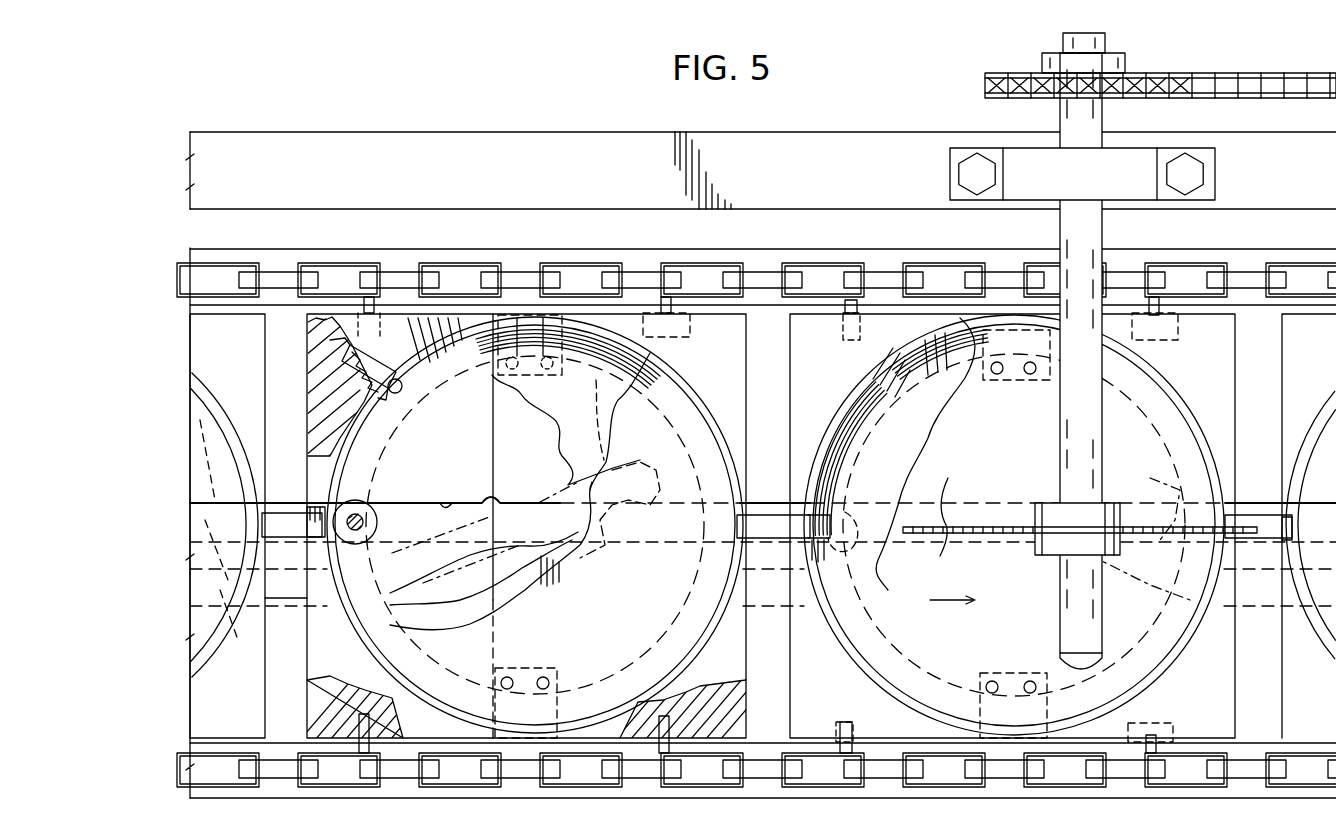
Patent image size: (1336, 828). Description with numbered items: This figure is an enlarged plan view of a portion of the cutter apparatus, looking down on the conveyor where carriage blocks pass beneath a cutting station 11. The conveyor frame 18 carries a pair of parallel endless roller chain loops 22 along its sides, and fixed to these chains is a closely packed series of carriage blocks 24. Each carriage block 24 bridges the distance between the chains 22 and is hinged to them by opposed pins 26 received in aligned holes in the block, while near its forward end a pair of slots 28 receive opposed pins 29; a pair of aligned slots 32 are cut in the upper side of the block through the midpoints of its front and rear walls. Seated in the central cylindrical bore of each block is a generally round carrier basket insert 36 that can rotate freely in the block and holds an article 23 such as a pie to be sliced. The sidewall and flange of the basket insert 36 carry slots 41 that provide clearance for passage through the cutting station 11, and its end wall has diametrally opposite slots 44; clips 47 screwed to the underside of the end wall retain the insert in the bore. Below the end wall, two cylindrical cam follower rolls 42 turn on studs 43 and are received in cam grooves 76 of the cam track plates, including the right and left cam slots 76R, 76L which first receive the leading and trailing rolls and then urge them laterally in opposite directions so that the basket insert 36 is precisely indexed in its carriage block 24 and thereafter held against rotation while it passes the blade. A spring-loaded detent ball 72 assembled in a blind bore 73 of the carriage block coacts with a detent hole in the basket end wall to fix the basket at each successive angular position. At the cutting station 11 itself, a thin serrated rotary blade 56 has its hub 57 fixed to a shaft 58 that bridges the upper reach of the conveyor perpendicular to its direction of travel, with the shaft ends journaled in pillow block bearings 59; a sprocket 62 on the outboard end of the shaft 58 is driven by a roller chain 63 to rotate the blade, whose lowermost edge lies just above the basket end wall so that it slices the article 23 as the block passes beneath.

The cutting station 11 is at (903, 142).
The frame 18 is at (546, 138).
The roller chain loops 22 is at (834, 266).
The articles 23 is at (642, 594).
The carriage block 24 is at (449, 311).
The pins 26 is at (378, 297).
The slots 28 is at (724, 292).
The pins 29 is at (672, 294).
The aligned slots 32 is at (312, 520).
The carrier basket insert 36 is at (823, 429).
The slots 41 is at (830, 517).
The cam follower rolls 42 is at (375, 520).
The studs 43 is at (357, 514).
The slots 44 is at (592, 470).
The clips 47 is at (575, 322).
The rotary blade 56 is at (946, 527).
The hub 57 is at (1114, 556).
The shaft 58 is at (1085, 626).
The pillow block bearings 59 is at (1148, 162).
The sprocket 62 is at (1125, 66).
The roller chains 63 is at (1261, 80).
The spring-loaded detent ball 72 is at (398, 388).
The blind bore 73 is at (392, 398).
The grooves 76 is at (768, 513).
The cam slot 76L is at (452, 503).
The cam slot 76R is at (280, 600).